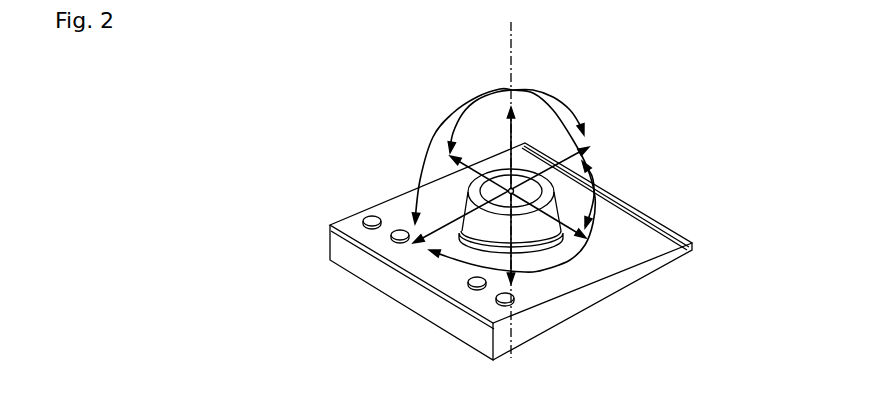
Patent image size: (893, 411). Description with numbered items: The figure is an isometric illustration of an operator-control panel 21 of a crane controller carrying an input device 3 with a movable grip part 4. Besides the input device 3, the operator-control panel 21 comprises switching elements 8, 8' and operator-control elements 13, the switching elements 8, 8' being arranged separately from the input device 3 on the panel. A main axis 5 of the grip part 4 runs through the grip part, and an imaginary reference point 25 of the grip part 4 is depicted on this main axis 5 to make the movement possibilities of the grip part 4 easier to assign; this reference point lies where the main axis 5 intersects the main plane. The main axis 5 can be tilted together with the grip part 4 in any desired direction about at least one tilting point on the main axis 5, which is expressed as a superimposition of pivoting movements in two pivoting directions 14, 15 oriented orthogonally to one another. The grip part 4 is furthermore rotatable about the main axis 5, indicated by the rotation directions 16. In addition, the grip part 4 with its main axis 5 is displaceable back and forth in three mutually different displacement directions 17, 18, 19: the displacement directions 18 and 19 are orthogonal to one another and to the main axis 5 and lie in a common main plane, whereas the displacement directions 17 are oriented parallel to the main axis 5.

The input device 3 is at (483, 258).
The grip part 4 is at (472, 197).
The main axis 5 is at (515, 50).
The switching element 8 is at (364, 282).
The switching element 8' is at (326, 267).
The operator-control elements 13 is at (500, 300).
The pivoting direction 14 is at (577, 112).
The pivoting direction 15 is at (493, 85).
The rotation directions 16 is at (608, 218).
The displacement directions 17 is at (513, 133).
The displacement direction 18 is at (588, 163).
The displacement direction 19 is at (560, 218).
The operator-control panel 21 is at (650, 245).
The imaginary reference point 25 is at (508, 188).